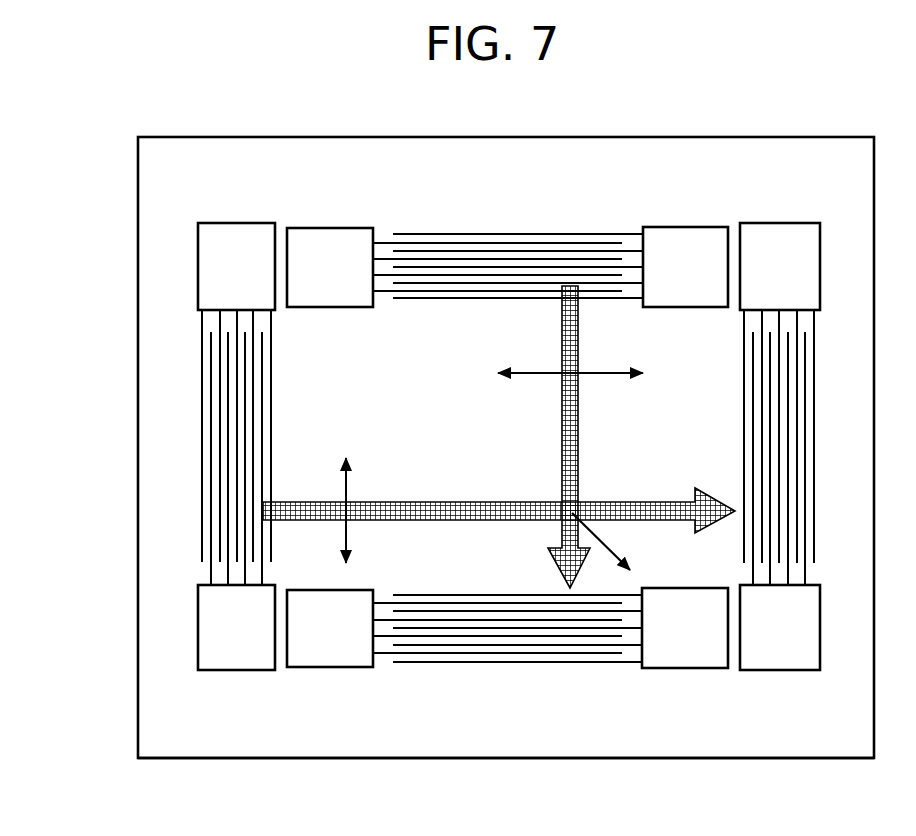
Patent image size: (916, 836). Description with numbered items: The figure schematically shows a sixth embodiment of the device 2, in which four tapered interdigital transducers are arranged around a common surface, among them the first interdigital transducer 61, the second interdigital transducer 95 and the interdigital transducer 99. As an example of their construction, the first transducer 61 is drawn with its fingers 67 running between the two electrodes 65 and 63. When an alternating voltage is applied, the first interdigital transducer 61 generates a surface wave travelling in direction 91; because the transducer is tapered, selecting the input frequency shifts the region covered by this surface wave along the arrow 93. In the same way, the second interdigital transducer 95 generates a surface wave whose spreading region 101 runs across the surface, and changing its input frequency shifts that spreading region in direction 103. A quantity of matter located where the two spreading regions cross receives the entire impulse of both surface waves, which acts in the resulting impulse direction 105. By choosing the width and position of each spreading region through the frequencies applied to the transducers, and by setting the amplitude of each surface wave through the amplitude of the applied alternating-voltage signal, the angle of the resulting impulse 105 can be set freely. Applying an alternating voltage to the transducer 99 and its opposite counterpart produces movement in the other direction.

The chip 2 is at (777, 152).
The first interdigital transducer 61 is at (135, 632).
The electrode 63 is at (232, 655).
The electrode 65 is at (232, 240).
The fingers 67 is at (202, 451).
The direction 91 is at (315, 500).
The arrow 93 is at (349, 527).
The second interdigital transducer 95 is at (576, 216).
The interdigital transducer 99 is at (480, 724).
The region 101 is at (570, 330).
The direction 103 is at (537, 376).
The impulse direction 105 is at (607, 550).